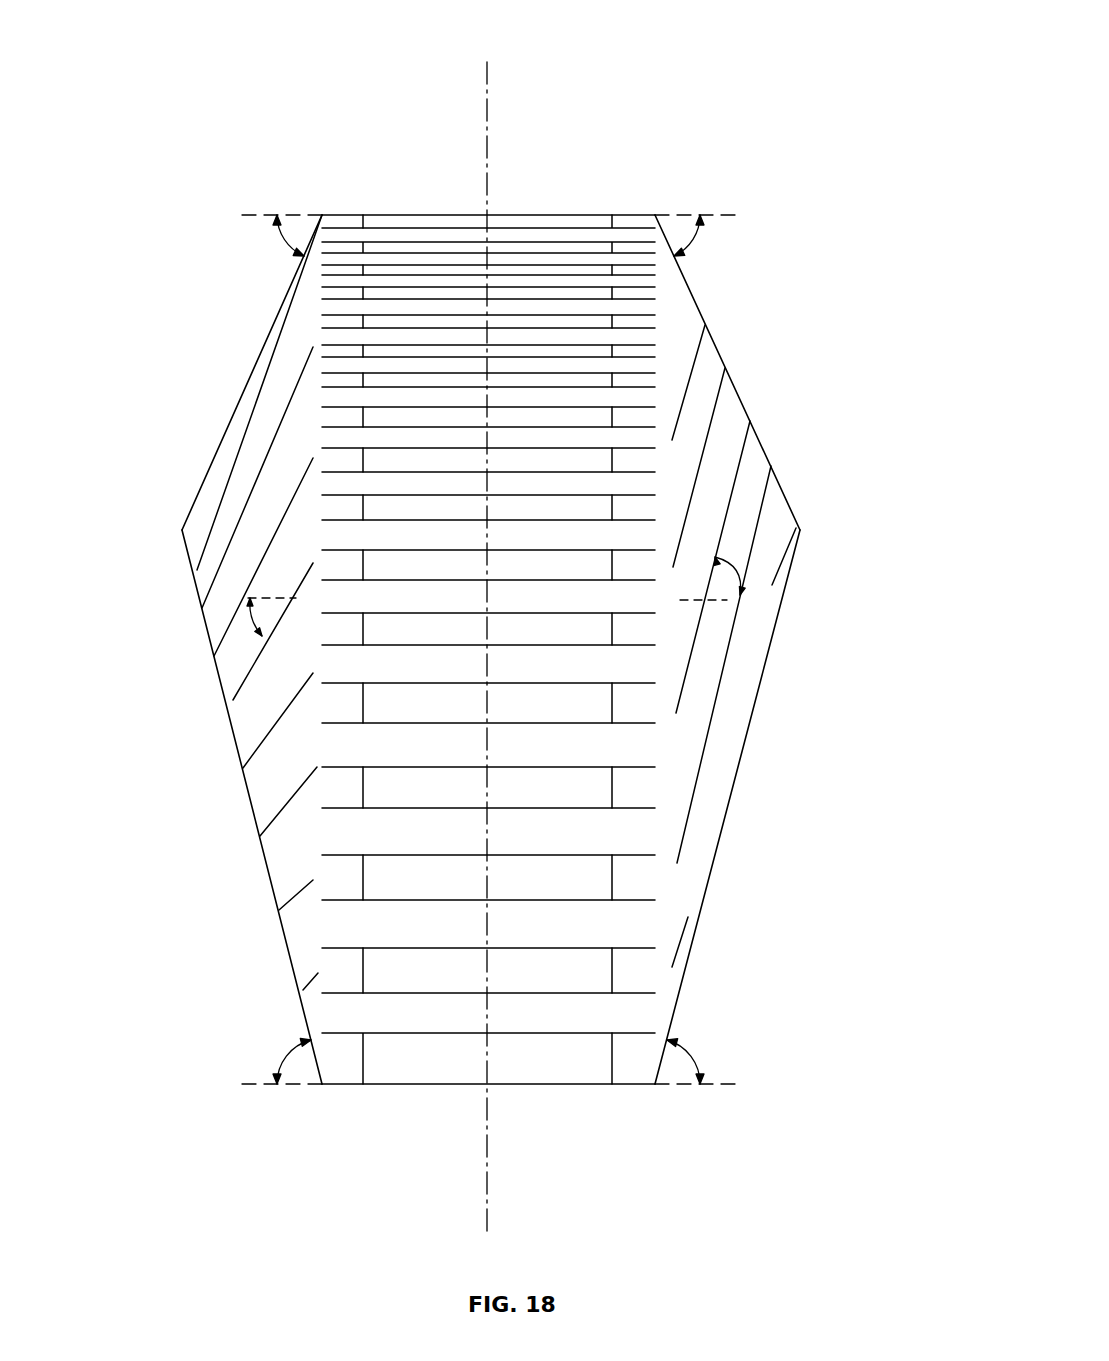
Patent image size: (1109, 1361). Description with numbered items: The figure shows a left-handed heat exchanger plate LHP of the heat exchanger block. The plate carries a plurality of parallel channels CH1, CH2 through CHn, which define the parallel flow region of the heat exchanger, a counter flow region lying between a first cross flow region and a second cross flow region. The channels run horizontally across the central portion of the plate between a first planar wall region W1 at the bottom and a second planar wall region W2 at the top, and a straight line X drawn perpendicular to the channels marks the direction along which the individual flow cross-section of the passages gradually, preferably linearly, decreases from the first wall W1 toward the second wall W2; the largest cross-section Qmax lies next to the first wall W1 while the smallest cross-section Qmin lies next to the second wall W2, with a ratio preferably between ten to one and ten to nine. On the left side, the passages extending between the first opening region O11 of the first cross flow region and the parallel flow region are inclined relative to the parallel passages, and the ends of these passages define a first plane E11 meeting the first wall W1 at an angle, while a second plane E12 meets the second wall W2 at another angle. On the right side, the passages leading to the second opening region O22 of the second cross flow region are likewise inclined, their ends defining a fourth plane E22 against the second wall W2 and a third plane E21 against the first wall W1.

The straight line X is at (475, 648).
The left-handed heat exchanger plate LHP is at (183, 432).
The first planar wall region W1 is at (557, 1087).
The second planar wall region W2 is at (548, 214).
The parallel channel CH1 is at (433, 235).
The parallel channel CH2 is at (523, 257).
The parallel channel CHn is at (463, 1010).
The smallest individual flow cross-section Qmin is at (357, 234).
The largest individual flow cross-section Qmax is at (597, 1010).
The first plane E11 is at (288, 952).
The second plane E12 is at (258, 358).
The third plane E21 is at (717, 860).
The fourth plane E22 is at (710, 332).
The first opening region O11 is at (208, 797).
The second opening region O22 is at (784, 393).